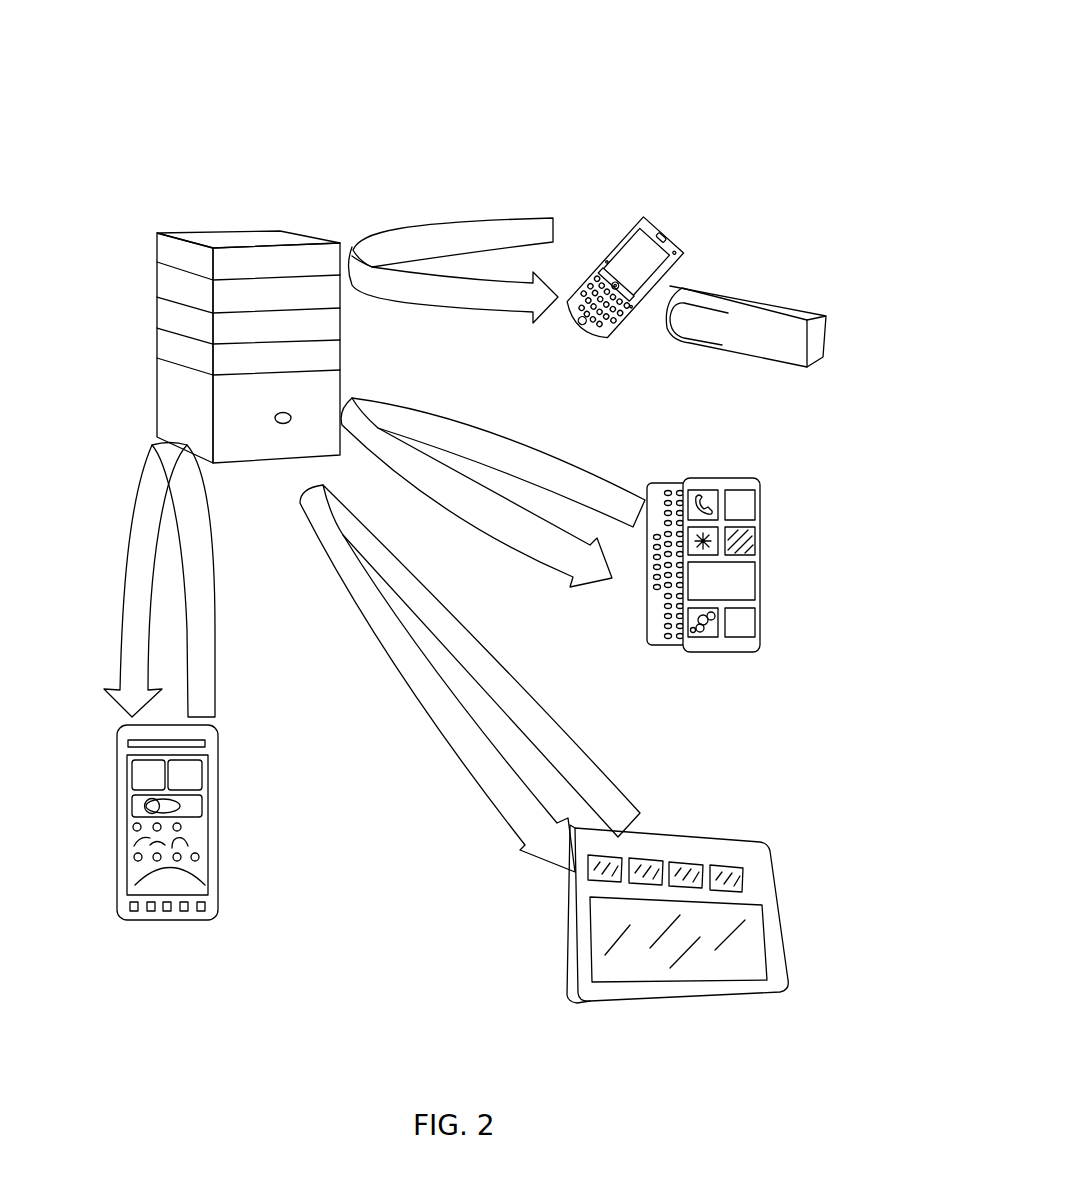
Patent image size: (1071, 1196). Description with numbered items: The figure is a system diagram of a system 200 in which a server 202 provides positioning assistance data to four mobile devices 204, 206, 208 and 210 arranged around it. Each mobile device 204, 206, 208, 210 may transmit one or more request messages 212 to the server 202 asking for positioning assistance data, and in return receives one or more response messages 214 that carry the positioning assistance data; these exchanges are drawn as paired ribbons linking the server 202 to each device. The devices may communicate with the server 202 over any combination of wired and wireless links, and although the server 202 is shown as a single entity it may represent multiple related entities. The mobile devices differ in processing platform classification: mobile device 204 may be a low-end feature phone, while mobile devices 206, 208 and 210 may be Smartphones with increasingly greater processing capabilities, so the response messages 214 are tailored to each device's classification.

The system 200 is at (720, 62).
The server 202 is at (213, 232).
The mobile device 204 is at (670, 233).
The mobile device 206 is at (722, 475).
The mobile device 208 is at (727, 835).
The mobile device 210 is at (165, 922).
The request message 212 is at (483, 218).
The response message 214 is at (428, 308).